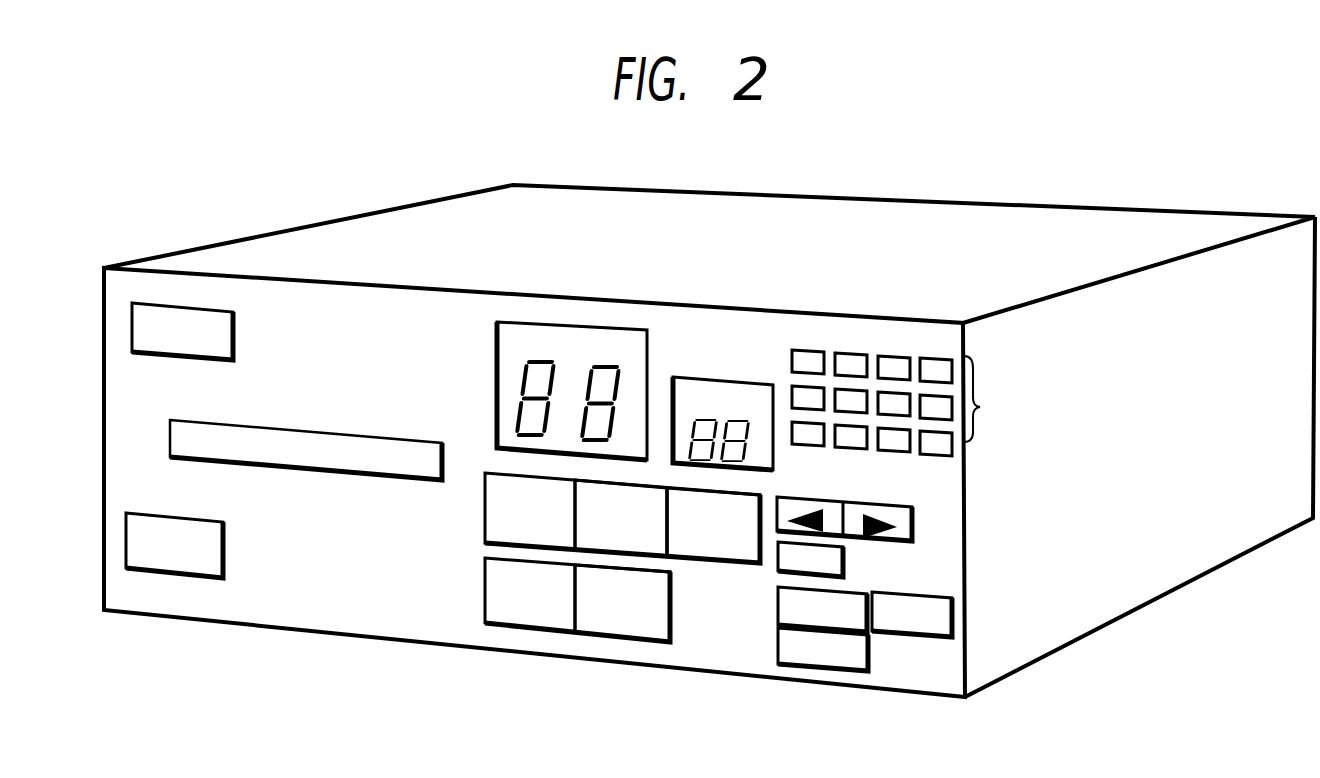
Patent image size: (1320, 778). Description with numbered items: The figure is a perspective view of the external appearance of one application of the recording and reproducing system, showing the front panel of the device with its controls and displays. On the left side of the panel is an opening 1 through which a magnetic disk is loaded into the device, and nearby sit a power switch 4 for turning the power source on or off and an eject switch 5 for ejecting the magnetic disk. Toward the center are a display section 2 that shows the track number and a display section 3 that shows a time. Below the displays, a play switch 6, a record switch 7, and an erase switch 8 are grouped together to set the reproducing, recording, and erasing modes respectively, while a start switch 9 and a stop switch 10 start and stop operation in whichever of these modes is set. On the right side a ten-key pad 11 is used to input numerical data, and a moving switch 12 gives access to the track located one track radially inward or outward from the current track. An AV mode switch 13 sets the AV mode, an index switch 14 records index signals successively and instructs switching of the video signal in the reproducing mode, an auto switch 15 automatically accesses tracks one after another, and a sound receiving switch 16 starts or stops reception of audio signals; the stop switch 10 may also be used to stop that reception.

The opening 1 is at (170, 442).
The display section 2 is at (568, 323).
The display section 3 is at (720, 377).
The power switch 4 is at (131, 330).
The eject switch 5 is at (125, 538).
The play switch 6 is at (485, 533).
The record switch 7 is at (660, 557).
The erase switch 8 is at (727, 563).
The start switch 9 is at (538, 632).
The stop switch 10 is at (630, 641).
The ten-key pad 11 is at (980, 407).
The moving switch 12 is at (912, 525).
The AV mode switch 13 is at (843, 562).
The index switch 14 is at (778, 603).
The auto switch 15 is at (952, 617).
The sound receiving switch 16 is at (848, 668).